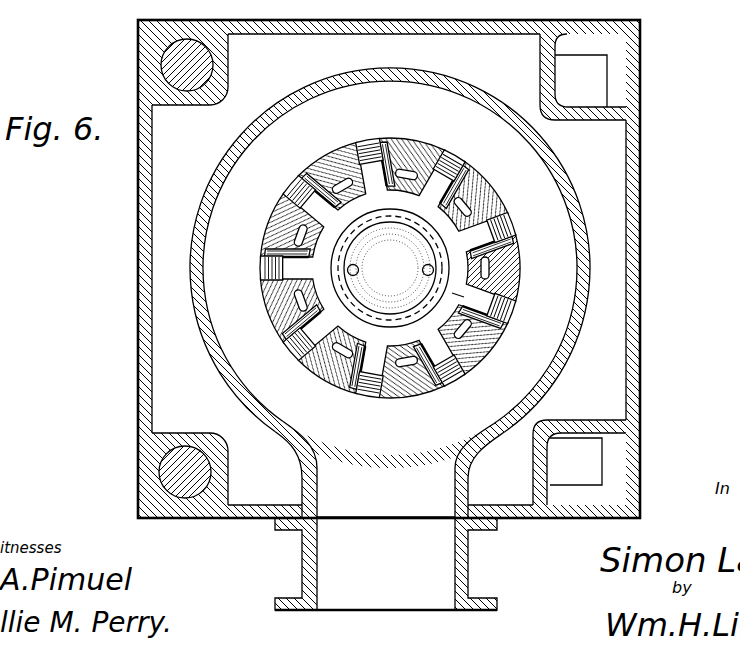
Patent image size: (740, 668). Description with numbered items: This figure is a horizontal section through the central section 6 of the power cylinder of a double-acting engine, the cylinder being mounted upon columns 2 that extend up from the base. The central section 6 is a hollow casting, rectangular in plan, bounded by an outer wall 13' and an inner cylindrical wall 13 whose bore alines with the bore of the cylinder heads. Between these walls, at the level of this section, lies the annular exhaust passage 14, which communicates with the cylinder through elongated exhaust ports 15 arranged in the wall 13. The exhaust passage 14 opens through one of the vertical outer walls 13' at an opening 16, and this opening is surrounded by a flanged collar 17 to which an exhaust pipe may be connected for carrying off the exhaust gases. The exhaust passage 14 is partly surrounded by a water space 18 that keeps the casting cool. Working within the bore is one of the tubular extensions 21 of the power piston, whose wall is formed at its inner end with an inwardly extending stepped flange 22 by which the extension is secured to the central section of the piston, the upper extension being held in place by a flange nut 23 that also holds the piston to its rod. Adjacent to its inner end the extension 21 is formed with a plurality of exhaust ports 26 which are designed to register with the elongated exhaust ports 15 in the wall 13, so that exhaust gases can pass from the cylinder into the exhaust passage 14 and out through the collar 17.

The column 2 is at (172, 60).
The central section 6 is at (370, 270).
The inner cylindrical wall 13 is at (391, 260).
The outer wall 13' is at (391, 269).
The annular exhaust passage 14 is at (390, 293).
The exhaust ports 15 is at (297, 189).
The opening 16 is at (386, 509).
The flanged collar 17 is at (386, 564).
The water space 18 is at (389, 269).
The tubular extension 21 is at (488, 278).
The stepped flange 22 is at (505, 310).
The flange nut 23 is at (390, 268).
The exhaust ports 26 is at (529, 233).